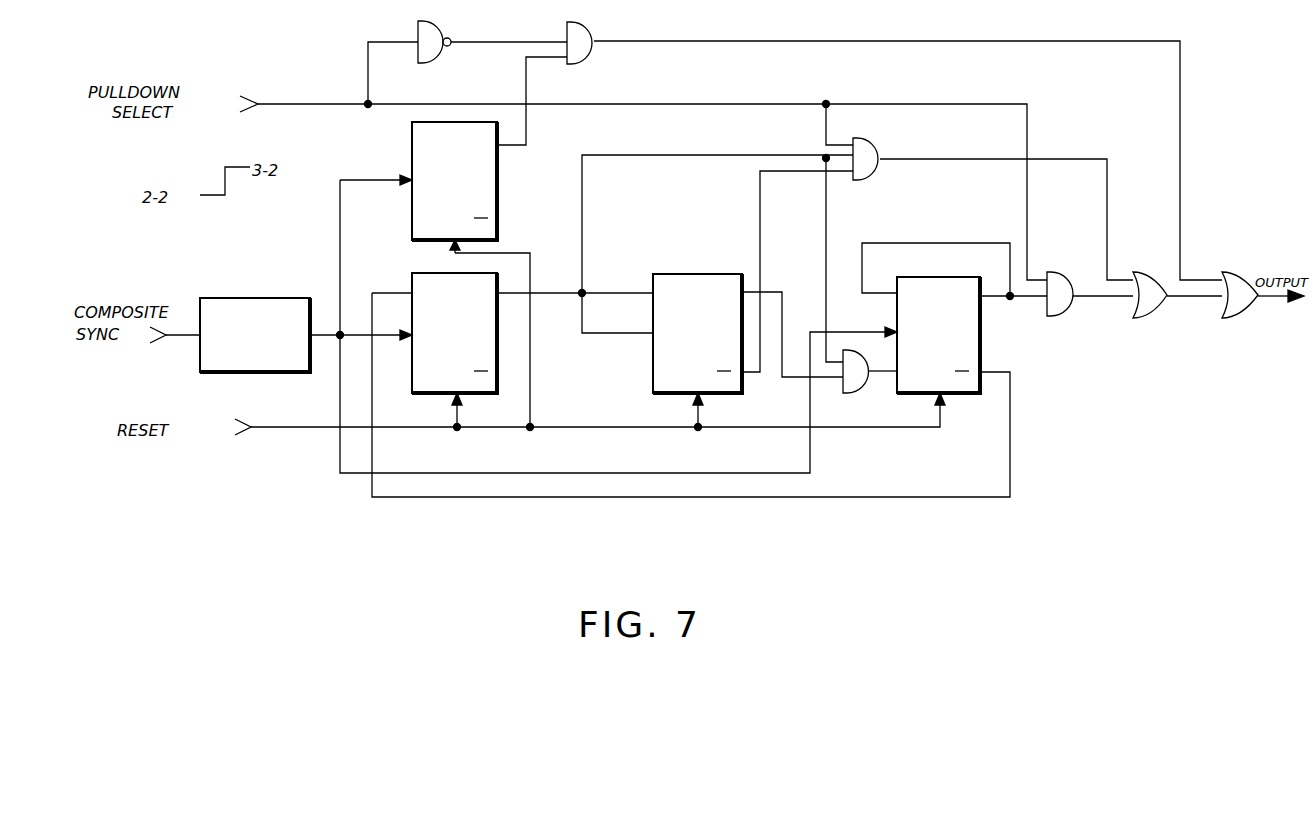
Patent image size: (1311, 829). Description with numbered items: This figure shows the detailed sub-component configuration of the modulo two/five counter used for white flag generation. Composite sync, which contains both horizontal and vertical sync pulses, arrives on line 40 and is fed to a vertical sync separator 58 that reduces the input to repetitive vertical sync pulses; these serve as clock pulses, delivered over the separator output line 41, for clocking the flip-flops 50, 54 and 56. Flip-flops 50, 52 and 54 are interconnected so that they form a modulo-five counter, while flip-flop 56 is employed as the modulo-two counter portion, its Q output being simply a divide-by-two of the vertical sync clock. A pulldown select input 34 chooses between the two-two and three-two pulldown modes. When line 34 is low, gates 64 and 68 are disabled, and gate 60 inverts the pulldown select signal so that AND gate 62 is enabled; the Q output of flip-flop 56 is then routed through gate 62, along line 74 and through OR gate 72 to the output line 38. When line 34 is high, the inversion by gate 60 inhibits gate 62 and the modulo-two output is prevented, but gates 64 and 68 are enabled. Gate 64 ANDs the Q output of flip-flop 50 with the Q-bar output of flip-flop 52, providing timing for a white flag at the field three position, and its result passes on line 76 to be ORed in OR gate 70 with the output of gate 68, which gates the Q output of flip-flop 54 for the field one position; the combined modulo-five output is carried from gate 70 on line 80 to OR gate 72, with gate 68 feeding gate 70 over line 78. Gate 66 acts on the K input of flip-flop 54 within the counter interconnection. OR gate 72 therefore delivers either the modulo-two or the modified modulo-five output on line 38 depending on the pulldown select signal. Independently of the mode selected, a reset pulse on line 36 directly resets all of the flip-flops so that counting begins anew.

The pulldown select input 34 is at (287, 104).
The reset line 36 is at (290, 430).
The output line 38 is at (1268, 302).
The composite sync line 40 is at (185, 335).
The vertical sync separator output line 41 is at (326, 338).
The flip-flop 50 is at (410, 373).
The flip-flop 52 is at (653, 372).
The flip-flop 54 is at (980, 350).
The flip-flop 56 is at (497, 178).
The vertical sync separator 58 is at (276, 298).
The gate 60 is at (438, 60).
The AND gate 62 is at (590, 60).
The gate 64 is at (878, 145).
The gate G2 66 is at (856, 393).
The gate 68 is at (1058, 272).
The OR gate 70 is at (1152, 272).
The OR gate 72 is at (1228, 270).
The line 74 is at (742, 44).
The line 76 is at (966, 166).
The gate G3 output line 78 is at (1100, 298).
The gate G4 output line 80 is at (1185, 298).